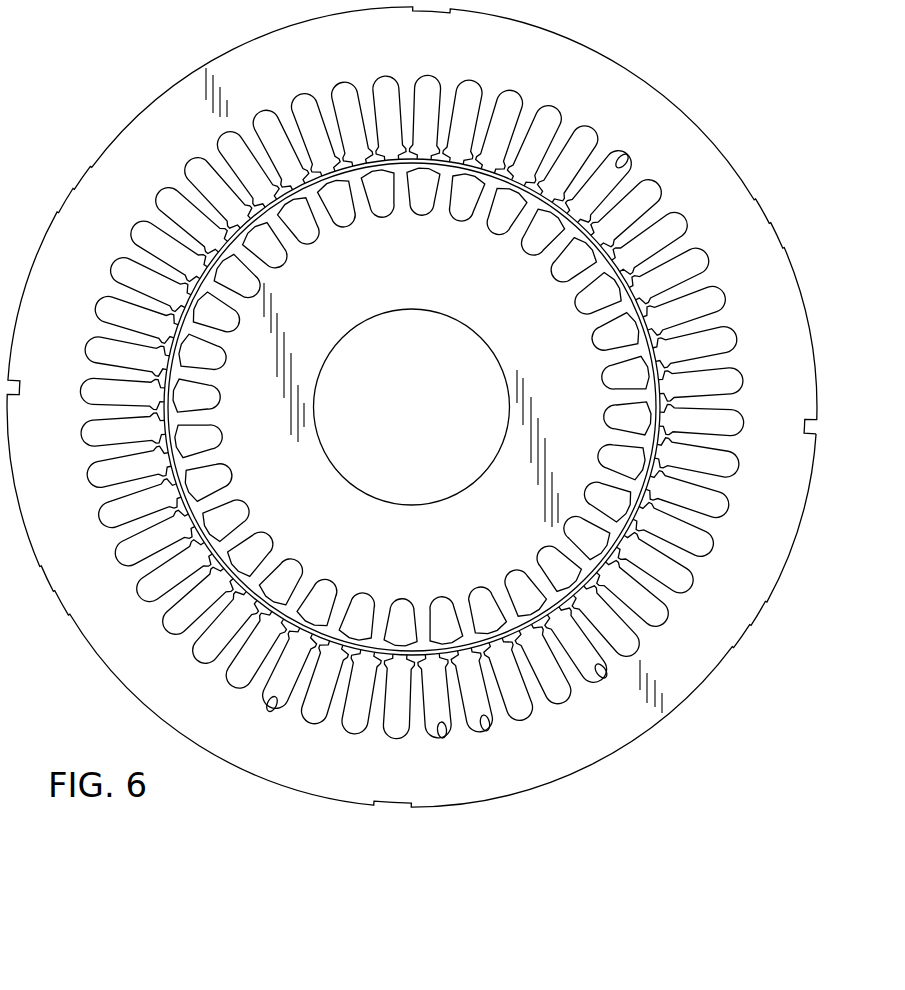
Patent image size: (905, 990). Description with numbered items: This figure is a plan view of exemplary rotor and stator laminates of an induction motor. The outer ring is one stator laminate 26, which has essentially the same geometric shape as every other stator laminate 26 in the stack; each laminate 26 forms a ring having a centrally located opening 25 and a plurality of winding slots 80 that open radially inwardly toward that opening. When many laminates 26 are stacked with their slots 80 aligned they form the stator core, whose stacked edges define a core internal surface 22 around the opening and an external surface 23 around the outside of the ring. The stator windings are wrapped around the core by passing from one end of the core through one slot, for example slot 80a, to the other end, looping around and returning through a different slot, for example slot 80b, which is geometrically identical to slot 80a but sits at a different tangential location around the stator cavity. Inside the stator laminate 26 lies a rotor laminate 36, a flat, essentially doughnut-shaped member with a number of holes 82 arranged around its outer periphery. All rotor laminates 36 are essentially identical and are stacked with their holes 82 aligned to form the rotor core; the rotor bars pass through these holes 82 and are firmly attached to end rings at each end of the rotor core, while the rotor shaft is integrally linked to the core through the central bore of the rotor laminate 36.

The core internal surface 22 is at (197, 540).
The external surface 23 is at (675, 711).
The centrally located opening 25 is at (493, 187).
The stator laminate 26 is at (546, 46).
The rotor laminate 36 is at (580, 463).
The winding slots 80 is at (270, 710).
The slot 80a is at (600, 674).
The slot 80b is at (618, 167).
The holes 82 is at (178, 438).